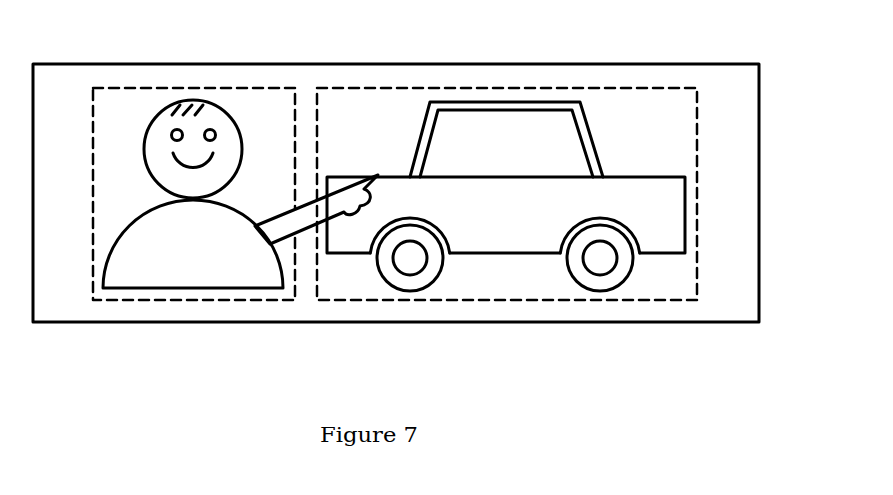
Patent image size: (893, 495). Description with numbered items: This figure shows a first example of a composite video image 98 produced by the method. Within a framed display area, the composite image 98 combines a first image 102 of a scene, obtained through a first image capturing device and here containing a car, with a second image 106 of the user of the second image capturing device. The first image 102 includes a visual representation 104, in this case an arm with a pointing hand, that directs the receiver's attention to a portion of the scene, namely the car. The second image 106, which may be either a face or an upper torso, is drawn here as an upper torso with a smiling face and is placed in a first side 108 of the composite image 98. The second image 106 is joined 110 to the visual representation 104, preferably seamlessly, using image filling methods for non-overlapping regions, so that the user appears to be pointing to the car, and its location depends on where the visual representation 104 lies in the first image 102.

The composite video image 98 is at (760, 192).
The first image 102 is at (649, 103).
The visual representation 104 is at (354, 178).
The second image 106 is at (195, 88).
The first side 108 is at (68, 79).
The join 110 is at (313, 192).